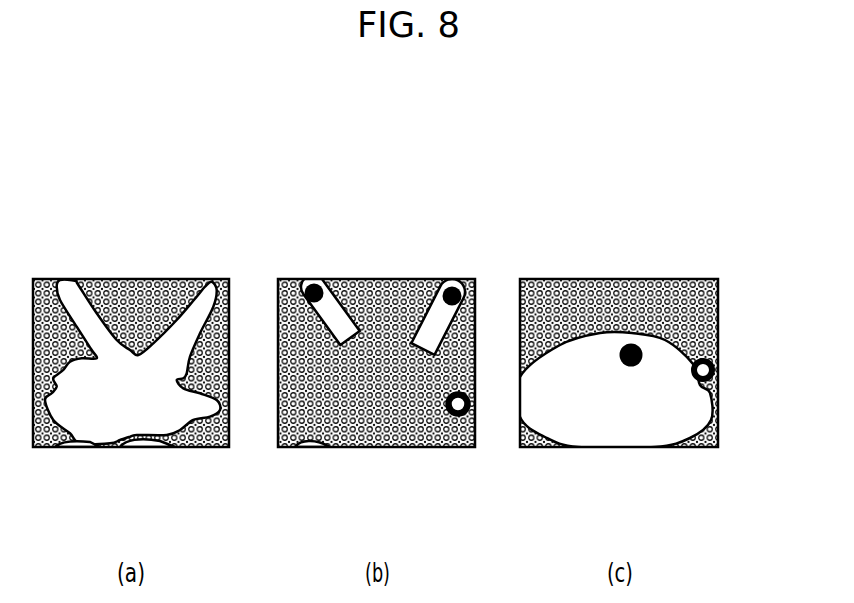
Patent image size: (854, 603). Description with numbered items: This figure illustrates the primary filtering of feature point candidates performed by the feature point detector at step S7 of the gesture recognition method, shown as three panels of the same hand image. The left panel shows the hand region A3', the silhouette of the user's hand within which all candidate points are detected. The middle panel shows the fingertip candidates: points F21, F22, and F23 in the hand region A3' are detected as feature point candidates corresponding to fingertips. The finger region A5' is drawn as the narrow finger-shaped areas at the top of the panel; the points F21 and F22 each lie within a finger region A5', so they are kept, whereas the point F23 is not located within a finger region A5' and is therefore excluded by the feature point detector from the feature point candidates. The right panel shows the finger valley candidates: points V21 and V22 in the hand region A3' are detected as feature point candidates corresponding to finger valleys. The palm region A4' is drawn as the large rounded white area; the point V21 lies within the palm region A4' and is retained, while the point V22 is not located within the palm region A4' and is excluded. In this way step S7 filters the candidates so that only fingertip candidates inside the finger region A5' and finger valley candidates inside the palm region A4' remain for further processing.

The feature point candidate filtering step S7 is at (389, 323).
The fingertip feature point candidate F21 is at (312, 285).
The finger region A5' is at (334, 278).
The fingertip feature point candidate F22 is at (452, 287).
The excluded fingertip feature point candidate F23 is at (470, 403).
The hand region A3' is at (132, 402).
The finger valley feature point candidate V21 is at (628, 367).
The excluded finger valley feature point candidate V22 is at (716, 367).
The palm region A4' is at (623, 431).